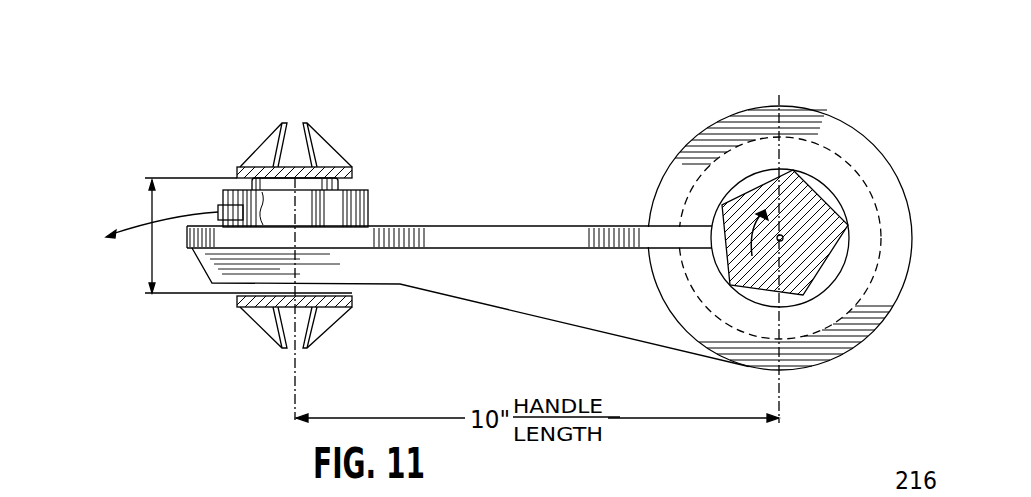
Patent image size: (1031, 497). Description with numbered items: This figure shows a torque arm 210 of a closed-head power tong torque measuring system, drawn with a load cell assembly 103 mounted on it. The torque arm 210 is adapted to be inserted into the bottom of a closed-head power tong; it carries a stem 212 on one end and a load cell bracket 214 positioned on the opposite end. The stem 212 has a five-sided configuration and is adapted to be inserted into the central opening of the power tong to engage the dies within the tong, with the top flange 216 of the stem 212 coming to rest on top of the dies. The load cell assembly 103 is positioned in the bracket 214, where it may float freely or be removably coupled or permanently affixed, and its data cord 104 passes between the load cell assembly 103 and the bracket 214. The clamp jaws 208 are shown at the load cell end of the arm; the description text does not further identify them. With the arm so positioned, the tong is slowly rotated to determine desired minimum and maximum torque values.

The load cell assembly 103 is at (314, 178).
The data cord 104 is at (132, 224).
The clamp jaw 208 is at (257, 153).
The torque arm 210 is at (488, 297).
The stem 212 is at (810, 200).
The load cell bracket 214 is at (368, 207).
The top flange 216 is at (875, 235).